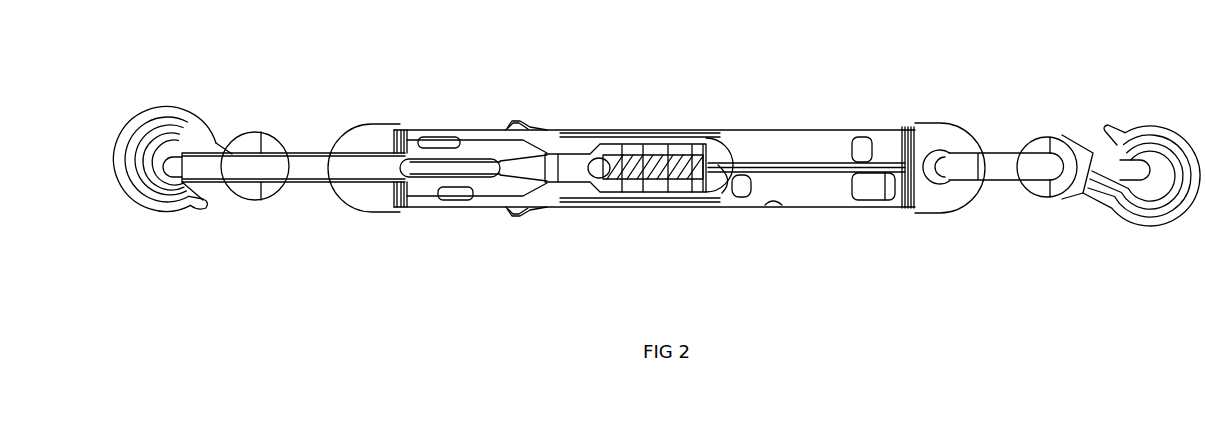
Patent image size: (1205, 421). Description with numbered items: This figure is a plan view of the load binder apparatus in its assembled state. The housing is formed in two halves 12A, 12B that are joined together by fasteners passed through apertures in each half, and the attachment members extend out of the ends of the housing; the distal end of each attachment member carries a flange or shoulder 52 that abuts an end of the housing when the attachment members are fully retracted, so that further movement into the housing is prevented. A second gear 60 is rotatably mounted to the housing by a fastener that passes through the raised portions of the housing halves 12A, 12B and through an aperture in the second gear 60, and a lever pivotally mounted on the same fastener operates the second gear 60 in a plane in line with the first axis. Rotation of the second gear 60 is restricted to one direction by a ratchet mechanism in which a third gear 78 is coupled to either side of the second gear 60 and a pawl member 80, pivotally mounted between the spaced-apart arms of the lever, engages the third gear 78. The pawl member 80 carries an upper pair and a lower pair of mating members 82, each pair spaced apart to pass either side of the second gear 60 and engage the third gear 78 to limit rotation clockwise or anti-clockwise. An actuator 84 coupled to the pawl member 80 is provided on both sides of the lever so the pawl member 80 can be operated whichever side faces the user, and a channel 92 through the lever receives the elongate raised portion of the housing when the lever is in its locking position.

The housing half 12A is at (805, 131).
The housing half 12B is at (826, 204).
The flange or shoulder 52 is at (910, 128).
The second gear 60 is at (713, 128).
The third gear 78 is at (670, 135).
The pawl member 80 is at (567, 133).
The mating members 82 is at (603, 132).
The actuator 84 is at (518, 131).
The channel 92 is at (483, 131).